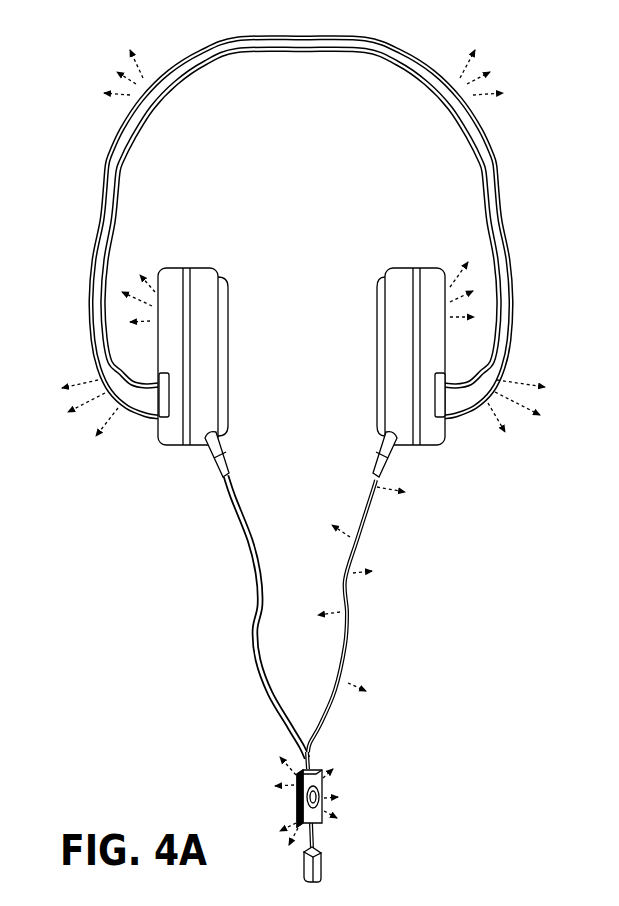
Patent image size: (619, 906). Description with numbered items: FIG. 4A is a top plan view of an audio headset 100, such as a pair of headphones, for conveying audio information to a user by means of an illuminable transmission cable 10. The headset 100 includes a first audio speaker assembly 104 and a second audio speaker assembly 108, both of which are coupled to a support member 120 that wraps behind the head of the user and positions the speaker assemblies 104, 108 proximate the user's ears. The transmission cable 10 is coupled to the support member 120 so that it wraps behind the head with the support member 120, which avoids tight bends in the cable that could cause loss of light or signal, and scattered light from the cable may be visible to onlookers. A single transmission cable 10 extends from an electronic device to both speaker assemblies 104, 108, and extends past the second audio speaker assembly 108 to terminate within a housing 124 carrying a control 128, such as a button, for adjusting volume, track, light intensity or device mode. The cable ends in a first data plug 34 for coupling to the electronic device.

The headset 100 is at (547, 102).
The support member 120 is at (300, 47).
The first audio speaker assembly 104 is at (189, 455).
The second audio speaker assembly 108 is at (418, 455).
The housing 124 is at (320, 767).
The control 128 is at (323, 804).
The first data plug 34 is at (318, 866).
The transmission cable 10 is at (117, 127).